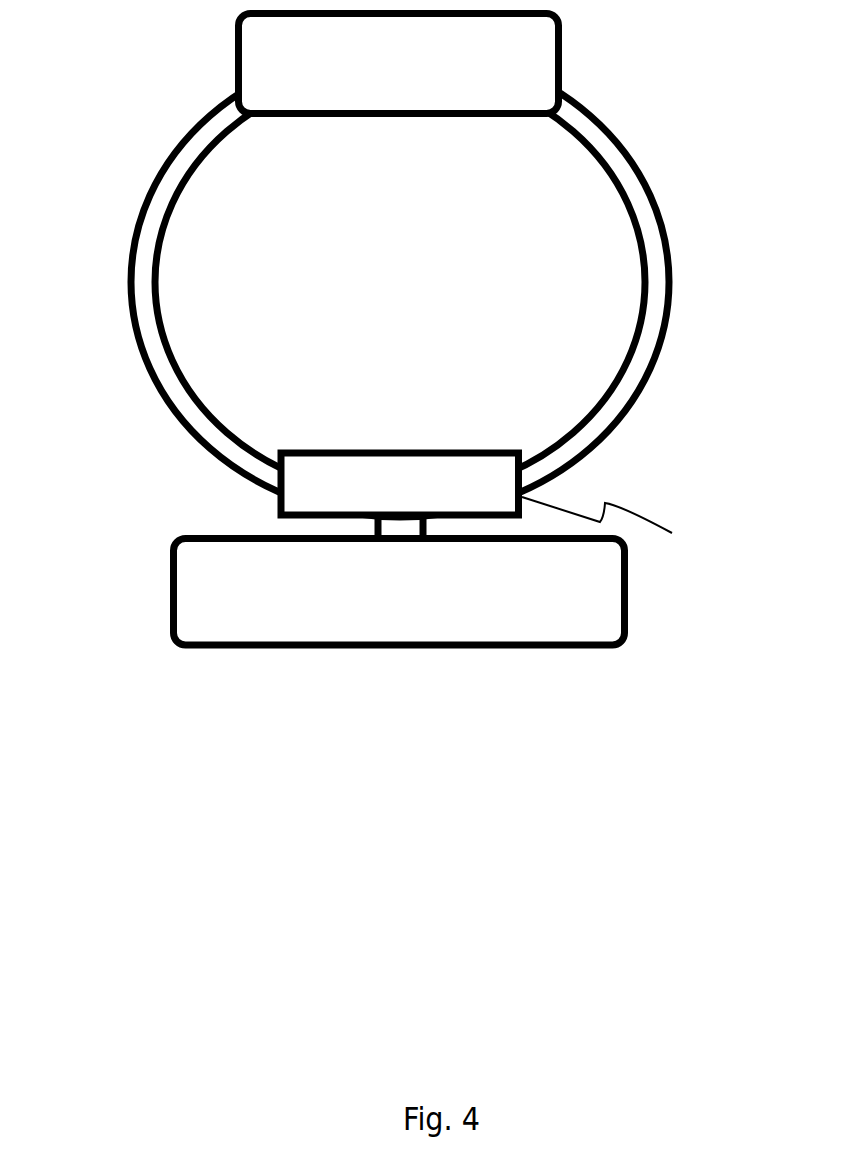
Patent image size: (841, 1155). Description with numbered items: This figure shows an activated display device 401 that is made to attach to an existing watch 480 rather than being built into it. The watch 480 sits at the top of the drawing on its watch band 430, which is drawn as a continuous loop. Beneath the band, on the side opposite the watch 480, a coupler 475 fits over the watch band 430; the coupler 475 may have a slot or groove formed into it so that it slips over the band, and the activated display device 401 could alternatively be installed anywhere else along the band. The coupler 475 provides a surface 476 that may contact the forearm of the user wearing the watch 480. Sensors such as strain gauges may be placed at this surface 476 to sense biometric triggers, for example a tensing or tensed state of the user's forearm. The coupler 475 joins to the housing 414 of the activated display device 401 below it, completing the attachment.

The activated display device 401 is at (457, 615).
The housing 414 is at (170, 605).
The watch band 430 is at (136, 343).
The coupler 475 is at (618, 528).
The surface 476 is at (447, 450).
The watch 480 is at (234, 43).